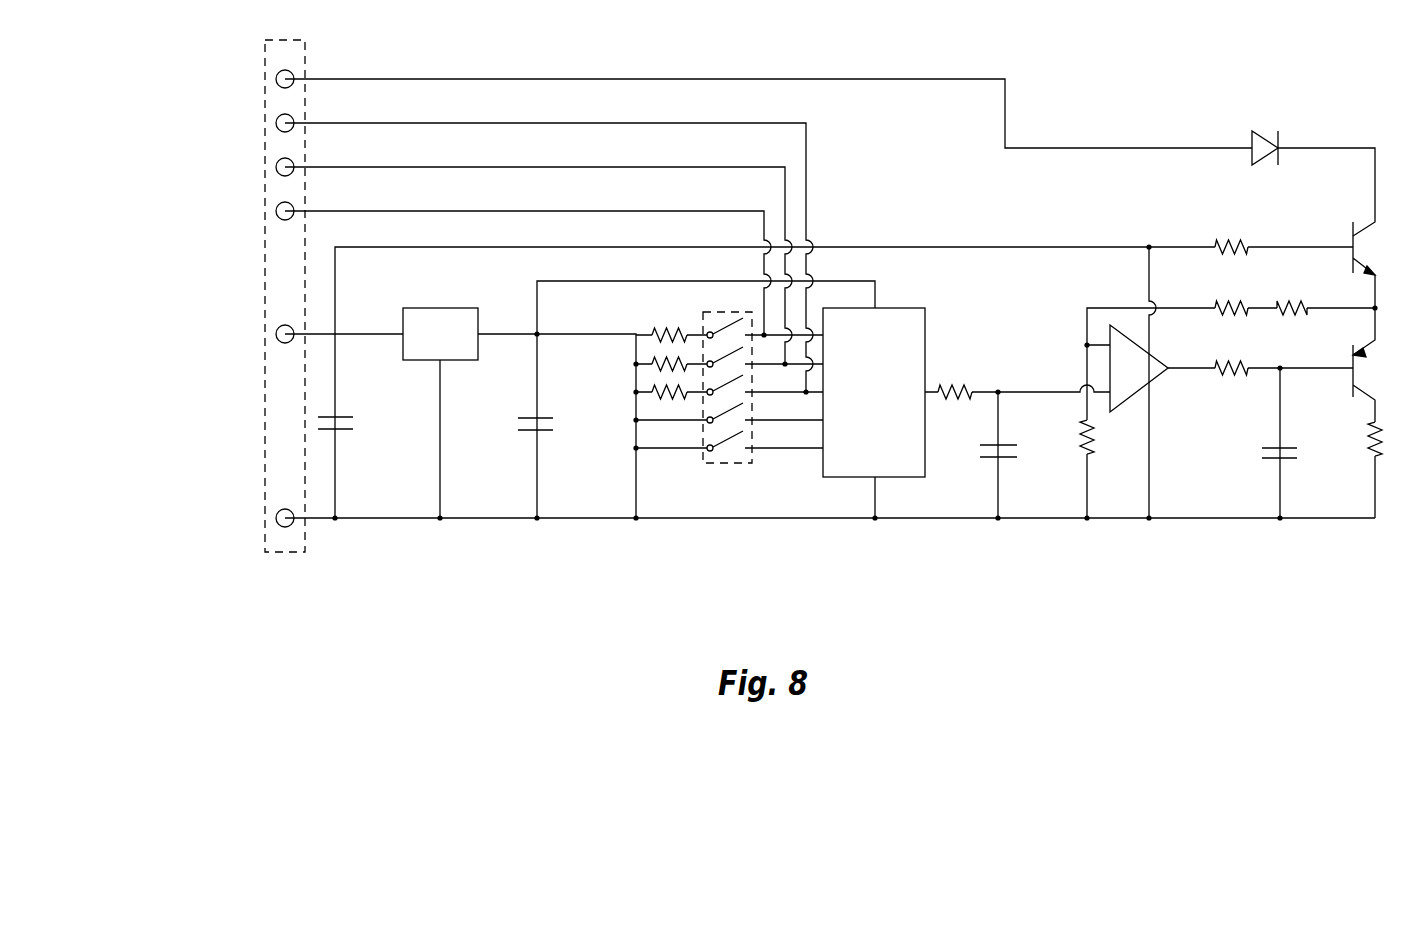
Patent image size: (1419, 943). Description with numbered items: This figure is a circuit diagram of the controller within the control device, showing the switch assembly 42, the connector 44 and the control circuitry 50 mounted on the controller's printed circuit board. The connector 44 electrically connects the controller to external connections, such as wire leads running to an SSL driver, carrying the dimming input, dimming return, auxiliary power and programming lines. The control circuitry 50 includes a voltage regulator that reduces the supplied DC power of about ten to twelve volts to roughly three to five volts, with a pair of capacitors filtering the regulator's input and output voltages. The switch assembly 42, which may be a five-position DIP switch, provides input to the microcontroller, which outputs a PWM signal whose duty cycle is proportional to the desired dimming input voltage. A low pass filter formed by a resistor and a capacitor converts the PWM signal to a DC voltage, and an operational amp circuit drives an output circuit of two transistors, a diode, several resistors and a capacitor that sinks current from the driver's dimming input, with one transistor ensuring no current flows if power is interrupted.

The control circuitry 50 is at (1063, 46).
The connector 44 is at (288, 553).
The switch assembly 42 is at (716, 464).